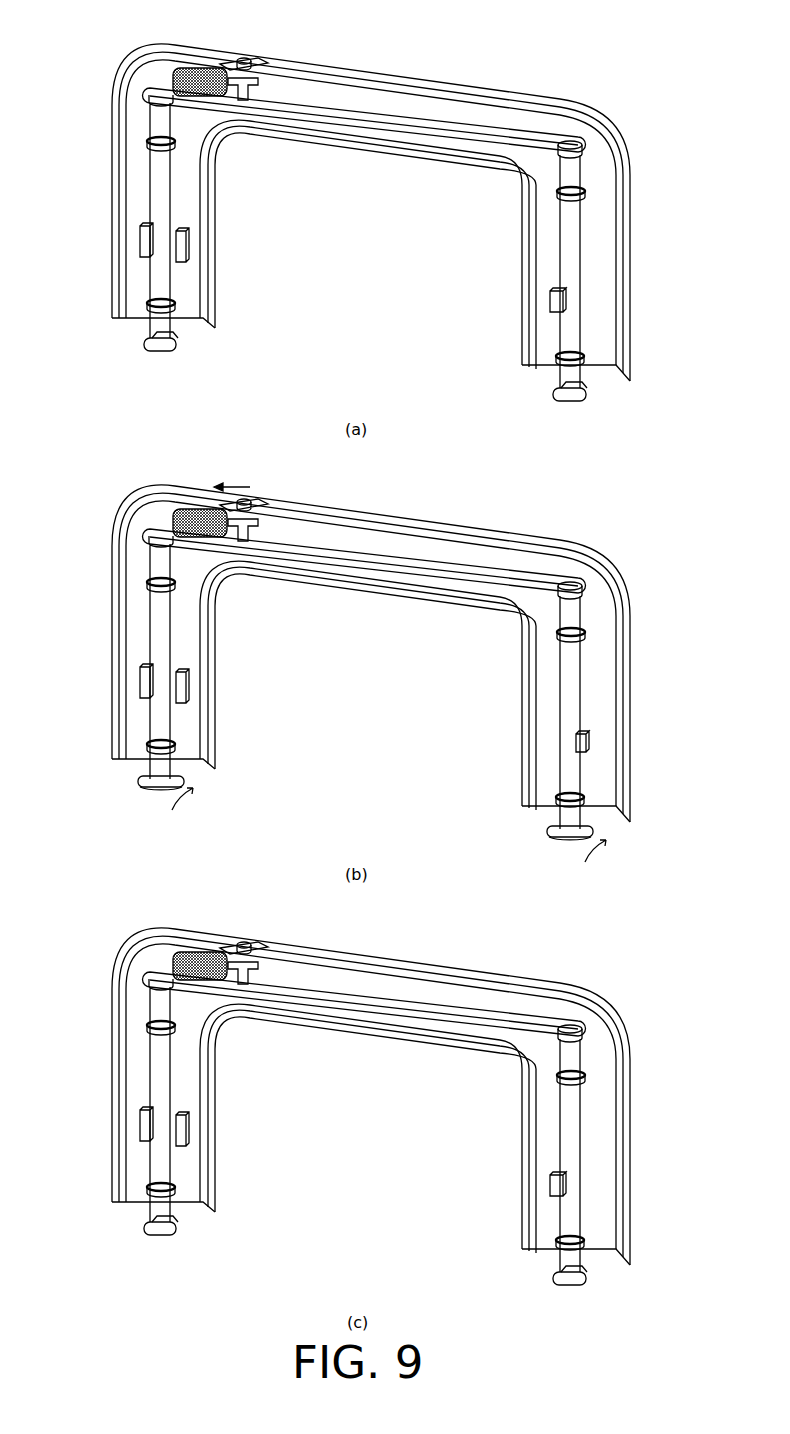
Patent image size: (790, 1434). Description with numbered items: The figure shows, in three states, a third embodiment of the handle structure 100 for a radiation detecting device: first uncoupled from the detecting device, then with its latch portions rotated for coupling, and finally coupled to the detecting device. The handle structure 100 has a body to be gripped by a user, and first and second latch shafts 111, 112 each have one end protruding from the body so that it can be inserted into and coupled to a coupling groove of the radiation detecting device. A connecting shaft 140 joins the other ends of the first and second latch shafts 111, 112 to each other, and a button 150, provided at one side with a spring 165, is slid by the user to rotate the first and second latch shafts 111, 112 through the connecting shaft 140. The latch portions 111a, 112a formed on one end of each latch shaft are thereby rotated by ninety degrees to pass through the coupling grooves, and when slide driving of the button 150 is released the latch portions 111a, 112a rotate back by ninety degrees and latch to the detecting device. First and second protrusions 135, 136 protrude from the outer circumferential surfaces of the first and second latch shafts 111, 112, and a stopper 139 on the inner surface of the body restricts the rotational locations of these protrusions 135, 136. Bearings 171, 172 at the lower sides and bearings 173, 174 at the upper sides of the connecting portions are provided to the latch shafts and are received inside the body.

The handle structure 100 is at (371, 643).
The connecting shaft 140 is at (364, 536).
The button 150 is at (262, 503).
The spring 165 is at (200, 492).
The first latch shaft 111 is at (119, 658).
The second latch shaft 112 is at (619, 706).
The latch portion 111a is at (158, 812).
The latch portion 112a is at (568, 861).
The first protrusion 135 is at (220, 687).
The second protrusion 136 is at (592, 740).
The stopper 139 is at (105, 682).
The bearing 171 is at (120, 735).
The bearing 172 is at (618, 803).
The bearing 173 is at (120, 590).
The bearing 174 is at (619, 640).